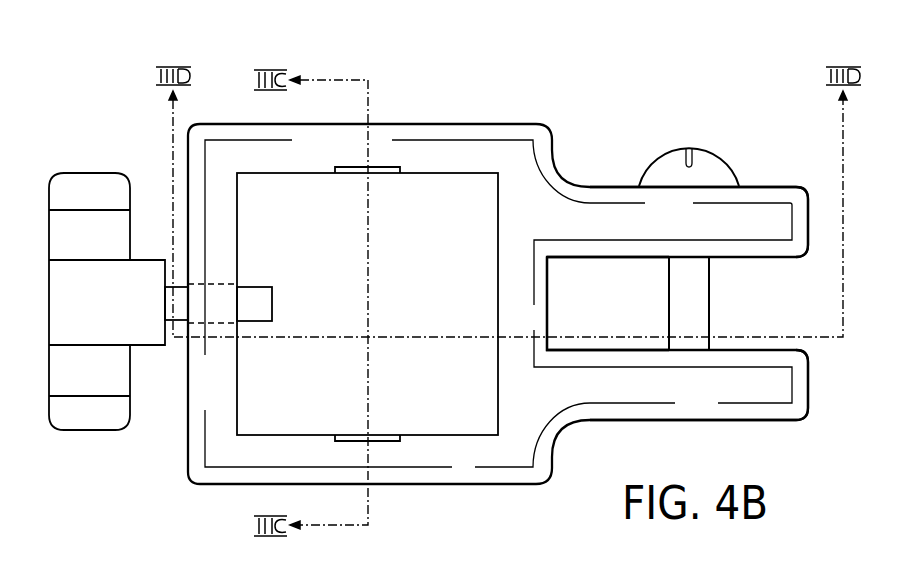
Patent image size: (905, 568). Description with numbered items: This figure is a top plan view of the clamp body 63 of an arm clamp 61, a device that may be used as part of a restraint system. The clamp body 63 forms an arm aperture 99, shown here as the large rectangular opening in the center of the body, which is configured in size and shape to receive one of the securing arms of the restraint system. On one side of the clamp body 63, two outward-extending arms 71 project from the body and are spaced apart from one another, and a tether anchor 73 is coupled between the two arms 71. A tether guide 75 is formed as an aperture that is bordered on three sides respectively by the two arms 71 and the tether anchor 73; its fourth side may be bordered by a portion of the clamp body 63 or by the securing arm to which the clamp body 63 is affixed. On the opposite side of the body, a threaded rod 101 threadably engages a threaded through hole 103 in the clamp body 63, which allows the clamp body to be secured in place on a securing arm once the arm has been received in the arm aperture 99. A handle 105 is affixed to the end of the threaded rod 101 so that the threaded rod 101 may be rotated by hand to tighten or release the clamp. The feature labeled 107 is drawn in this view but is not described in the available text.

The arm clamp 61 is at (133, 110).
The clamp body 63 is at (199, 134).
The outward-extending arms 71 is at (800, 197).
The tether anchor 73 is at (693, 285).
The tether guide 75 is at (603, 303).
The arm aperture 99 is at (367, 304).
The threaded rod 101 is at (166, 322).
The threaded through hole 103 is at (228, 284).
The handle 105 is at (88, 422).
The tab 107 is at (440, 434).